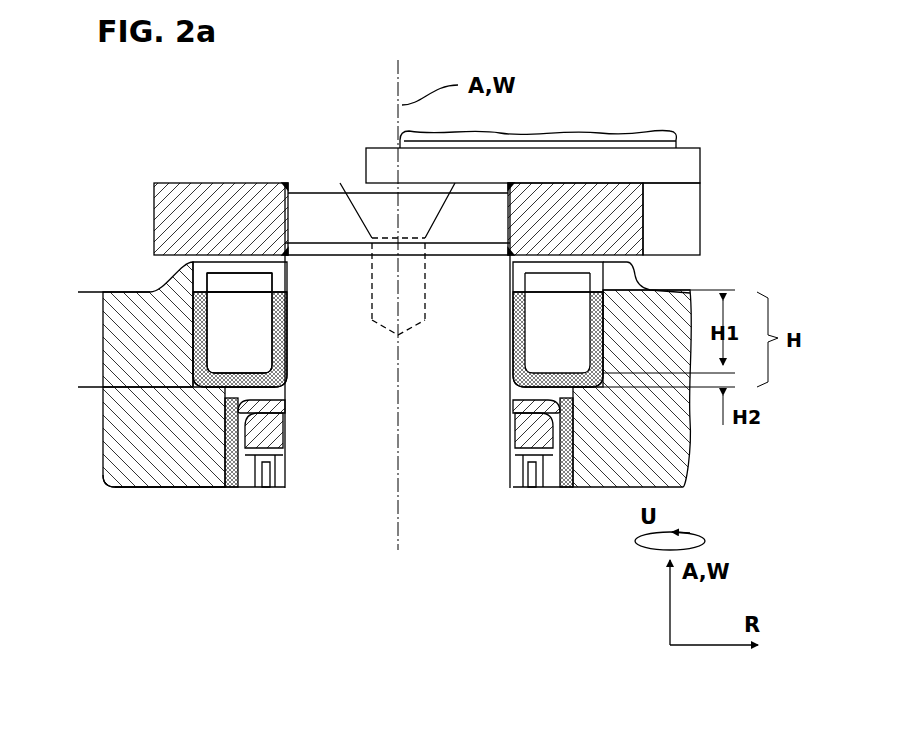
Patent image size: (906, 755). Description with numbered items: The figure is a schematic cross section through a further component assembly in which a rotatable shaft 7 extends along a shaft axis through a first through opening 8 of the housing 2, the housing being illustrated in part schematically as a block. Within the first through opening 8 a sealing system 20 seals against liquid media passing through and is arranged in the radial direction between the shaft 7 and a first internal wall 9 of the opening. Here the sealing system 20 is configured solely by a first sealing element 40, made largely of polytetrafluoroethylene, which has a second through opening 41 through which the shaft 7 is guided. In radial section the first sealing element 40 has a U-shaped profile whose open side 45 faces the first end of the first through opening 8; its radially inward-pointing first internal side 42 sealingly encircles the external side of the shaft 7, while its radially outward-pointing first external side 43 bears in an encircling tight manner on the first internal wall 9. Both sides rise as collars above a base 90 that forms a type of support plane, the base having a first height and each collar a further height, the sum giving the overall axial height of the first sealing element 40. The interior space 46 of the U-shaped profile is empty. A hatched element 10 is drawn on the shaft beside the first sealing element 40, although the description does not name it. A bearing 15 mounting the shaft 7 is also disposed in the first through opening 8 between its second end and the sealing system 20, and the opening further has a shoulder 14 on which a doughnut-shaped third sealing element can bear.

The housing 2 is at (137, 465).
The shaft 7 is at (326, 205).
The first through opening 8 is at (240, 430).
The first internal wall 9 is at (133, 291).
The rotor lamination stack 10 is at (632, 220).
The shoulder 14 is at (222, 400).
The bearing 15 is at (560, 460).
The sealing system 20 is at (77, 292).
The first sealing element 40 is at (200, 262).
The second through opening 41 is at (290, 335).
The first internal side 42 is at (290, 305).
The first external side 43 is at (192, 347).
The open side 45 is at (225, 283).
The interior space 46 is at (560, 336).
The base 90 is at (237, 385).